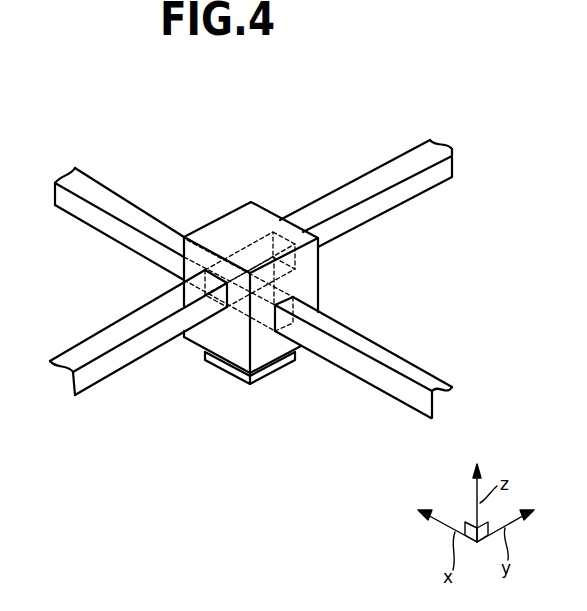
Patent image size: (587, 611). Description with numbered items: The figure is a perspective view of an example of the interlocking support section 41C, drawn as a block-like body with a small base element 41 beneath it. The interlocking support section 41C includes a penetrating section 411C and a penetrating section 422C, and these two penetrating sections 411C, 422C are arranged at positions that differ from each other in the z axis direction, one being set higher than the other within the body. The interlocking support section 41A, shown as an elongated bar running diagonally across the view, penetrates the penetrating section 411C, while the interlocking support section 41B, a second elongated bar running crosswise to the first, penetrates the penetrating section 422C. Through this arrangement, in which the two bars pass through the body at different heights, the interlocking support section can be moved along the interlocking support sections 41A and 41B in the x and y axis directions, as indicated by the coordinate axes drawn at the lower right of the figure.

The frame base plate 41 is at (222, 368).
The interlocking support section 41A is at (408, 188).
The interlocking support section 41B is at (375, 386).
The interlocking support section 41C is at (224, 229).
The penetrating section 411C is at (225, 281).
The penetrating section 422C is at (292, 299).